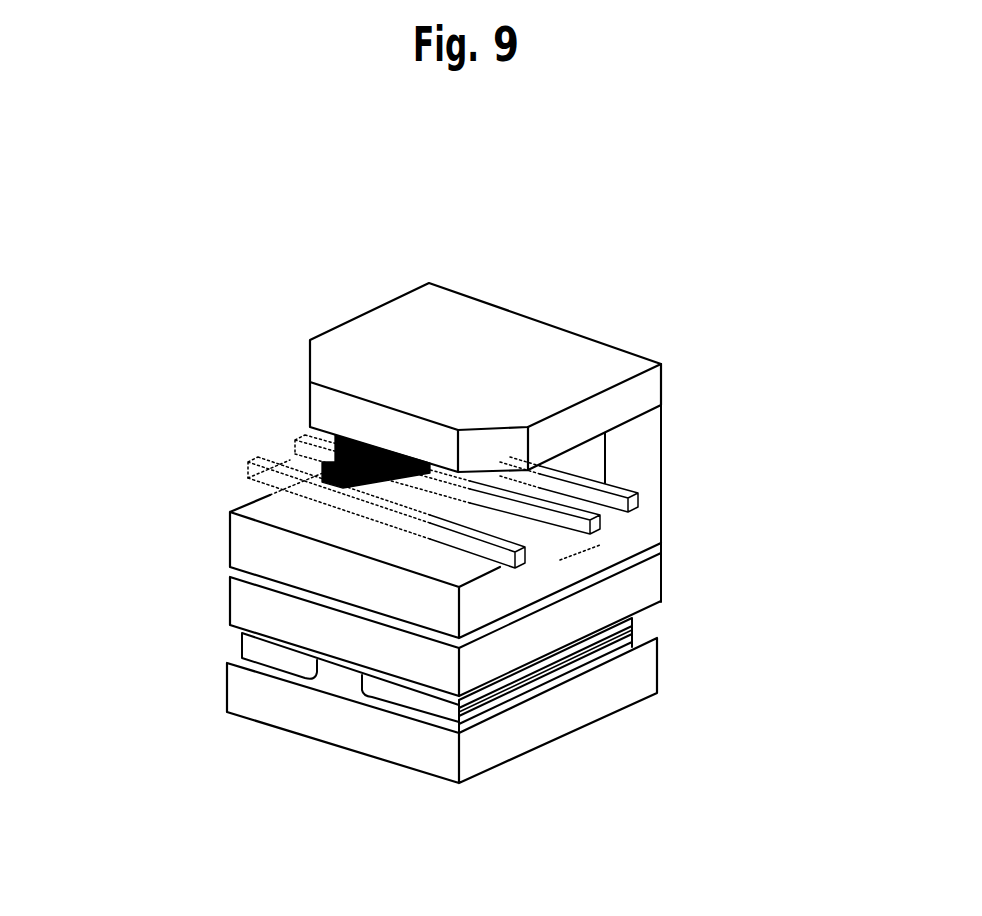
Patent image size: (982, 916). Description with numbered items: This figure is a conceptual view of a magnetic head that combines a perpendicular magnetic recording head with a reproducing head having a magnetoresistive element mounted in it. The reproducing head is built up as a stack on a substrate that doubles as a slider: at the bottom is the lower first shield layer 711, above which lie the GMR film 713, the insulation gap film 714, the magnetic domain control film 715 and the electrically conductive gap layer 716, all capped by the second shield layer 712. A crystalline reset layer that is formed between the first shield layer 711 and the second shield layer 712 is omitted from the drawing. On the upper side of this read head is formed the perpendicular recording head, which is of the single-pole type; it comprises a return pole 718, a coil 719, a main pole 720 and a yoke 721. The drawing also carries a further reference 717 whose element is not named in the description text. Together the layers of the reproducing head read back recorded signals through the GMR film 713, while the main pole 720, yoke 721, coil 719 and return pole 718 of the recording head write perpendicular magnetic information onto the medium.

The first shield layer 711 is at (430, 762).
The second shield layer 712 is at (462, 731).
The GMR film 713 is at (342, 673).
The insulation gap film 714 is at (262, 645).
The magnetic domain control film 715 is at (232, 624).
The electrically conductive gap layer 716 is at (470, 699).
The upper plate 717 is at (515, 643).
The return pole 718 is at (243, 545).
The coil 719 is at (555, 528).
The main pole 720 is at (322, 453).
The yoke 721 is at (358, 342).